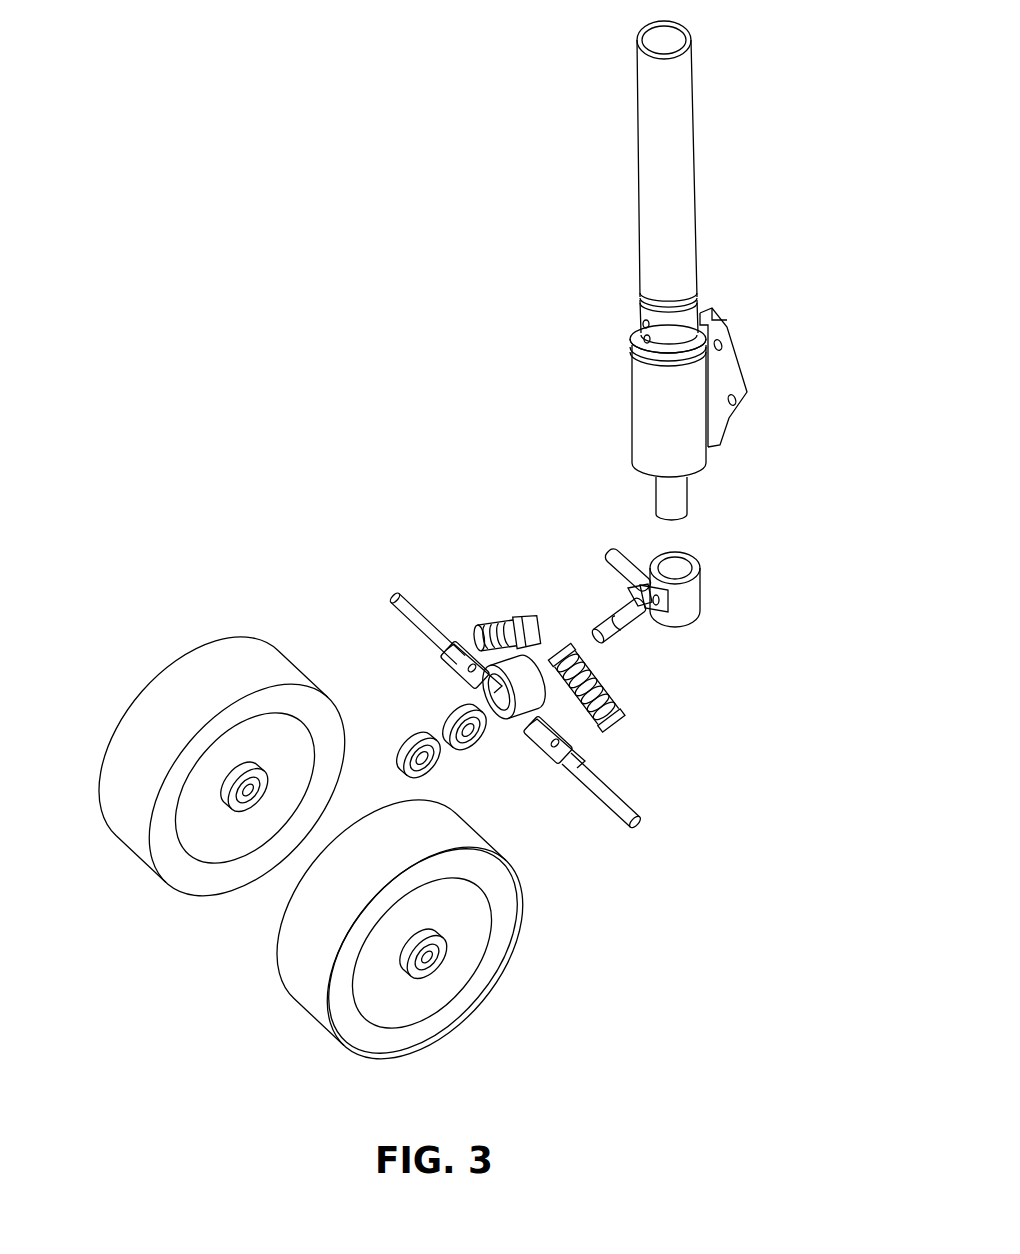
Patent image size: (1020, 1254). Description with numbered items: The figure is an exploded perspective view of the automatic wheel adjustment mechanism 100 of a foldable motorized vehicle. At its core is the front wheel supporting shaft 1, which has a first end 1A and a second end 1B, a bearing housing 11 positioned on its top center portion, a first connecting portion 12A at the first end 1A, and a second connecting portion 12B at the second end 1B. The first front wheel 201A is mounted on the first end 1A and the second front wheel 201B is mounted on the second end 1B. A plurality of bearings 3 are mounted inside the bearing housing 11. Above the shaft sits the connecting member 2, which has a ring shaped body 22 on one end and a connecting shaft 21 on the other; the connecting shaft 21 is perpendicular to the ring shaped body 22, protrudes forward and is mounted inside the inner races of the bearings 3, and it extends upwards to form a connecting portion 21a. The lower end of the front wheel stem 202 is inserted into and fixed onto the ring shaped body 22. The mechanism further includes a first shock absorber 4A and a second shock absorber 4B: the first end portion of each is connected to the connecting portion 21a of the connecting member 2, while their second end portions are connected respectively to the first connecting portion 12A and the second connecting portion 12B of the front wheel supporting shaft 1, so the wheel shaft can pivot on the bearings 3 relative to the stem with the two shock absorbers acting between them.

The automatic wheel adjustment mechanism 100 is at (168, 115).
The front wheel stem 202 is at (673, 207).
The connecting member 2 is at (688, 597).
The ring shaped body 22 is at (697, 562).
The connecting portion 21a is at (632, 595).
The connecting shaft 21 is at (620, 622).
The second shock absorber 4B is at (625, 716).
The first shock absorber 4A is at (513, 622).
The front wheel supporting shaft 1 is at (499, 717).
The first end 1A is at (445, 635).
The second end 1B is at (640, 822).
The bearing housing 11 is at (523, 697).
The first connecting portion 12A is at (447, 637).
The second connecting portion 12B is at (553, 757).
The bearings 3 is at (413, 737).
The first front wheel 201A is at (138, 800).
The second front wheel 201B is at (323, 917).